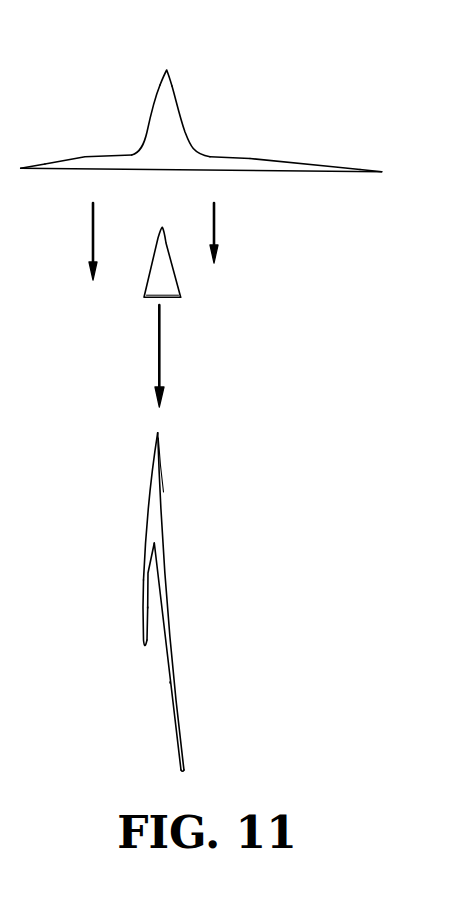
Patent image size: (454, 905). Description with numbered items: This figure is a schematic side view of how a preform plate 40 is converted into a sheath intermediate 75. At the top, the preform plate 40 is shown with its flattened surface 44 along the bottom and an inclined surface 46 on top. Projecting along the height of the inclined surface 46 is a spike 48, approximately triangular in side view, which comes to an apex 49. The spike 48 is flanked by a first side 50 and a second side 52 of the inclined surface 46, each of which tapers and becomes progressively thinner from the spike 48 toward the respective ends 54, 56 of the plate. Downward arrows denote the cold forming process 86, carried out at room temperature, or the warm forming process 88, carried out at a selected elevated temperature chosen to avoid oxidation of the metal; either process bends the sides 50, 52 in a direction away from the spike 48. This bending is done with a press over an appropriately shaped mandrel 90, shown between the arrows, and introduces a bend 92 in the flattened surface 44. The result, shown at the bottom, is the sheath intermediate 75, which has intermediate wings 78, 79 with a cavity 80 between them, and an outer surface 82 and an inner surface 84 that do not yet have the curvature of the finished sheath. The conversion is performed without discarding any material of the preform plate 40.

The preform plate 40 is at (221, 118).
The flattened surface 44 is at (200, 172).
The inclined surface 46 is at (223, 157).
The spike 48 is at (168, 105).
The apex 49 is at (167, 63).
The first side 50 is at (85, 157).
The second side 52 is at (283, 160).
The end 54 is at (21, 167).
The end 56 is at (382, 172).
The sheath intermediate 75 is at (184, 602).
The intermediate wing 78 is at (173, 655).
The intermediate wing 79 is at (142, 620).
The cavity 80 is at (148, 620).
The outer surface 82 is at (164, 492).
The inner surface 84 is at (170, 682).
The cold forming process 86 is at (90, 230).
The warm forming process 88 is at (217, 233).
The mandrel 90 is at (172, 287).
The bend 92 is at (152, 545).